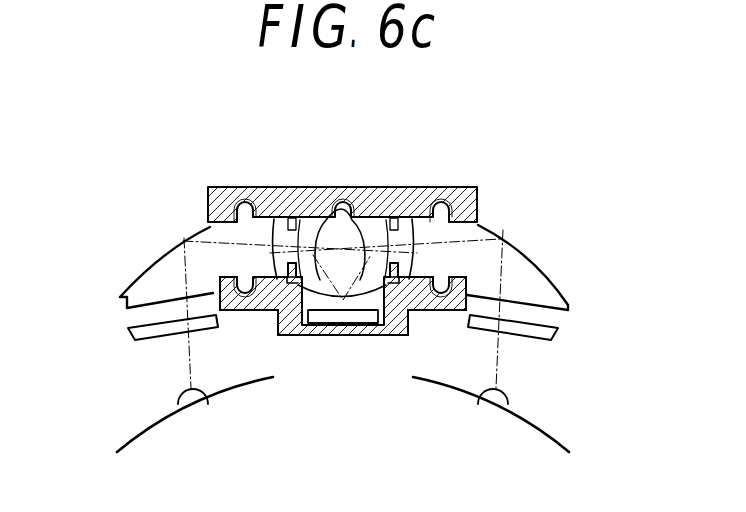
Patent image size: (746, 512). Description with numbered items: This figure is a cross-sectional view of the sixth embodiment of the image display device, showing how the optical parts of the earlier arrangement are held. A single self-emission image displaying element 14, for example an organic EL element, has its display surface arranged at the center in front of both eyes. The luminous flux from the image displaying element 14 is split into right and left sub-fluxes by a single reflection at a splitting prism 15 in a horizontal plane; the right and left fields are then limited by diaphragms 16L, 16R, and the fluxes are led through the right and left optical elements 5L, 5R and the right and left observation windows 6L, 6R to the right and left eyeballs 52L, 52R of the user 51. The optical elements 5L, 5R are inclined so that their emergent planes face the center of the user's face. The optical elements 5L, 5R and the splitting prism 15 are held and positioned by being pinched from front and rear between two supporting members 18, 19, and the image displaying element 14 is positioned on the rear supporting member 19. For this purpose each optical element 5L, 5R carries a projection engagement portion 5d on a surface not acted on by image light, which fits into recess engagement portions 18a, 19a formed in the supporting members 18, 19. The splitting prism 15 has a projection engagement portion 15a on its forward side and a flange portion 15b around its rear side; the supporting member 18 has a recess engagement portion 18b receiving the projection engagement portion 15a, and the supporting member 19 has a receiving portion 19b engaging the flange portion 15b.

The projection engagement portion 5d is at (210, 218).
The left optical element 5L is at (167, 267).
The right optical element 5R is at (523, 272).
The left observation window 6L is at (132, 333).
The right observation window 6R is at (556, 327).
The image displaying element 14 is at (331, 325).
The splitting prism 15 is at (406, 220).
The projection engagement portion of the splitting prism 15a is at (352, 217).
The flange portion 15b is at (309, 218).
The left diaphragm 16L is at (283, 217).
The right diaphragm 16R is at (482, 230).
The supporting member 18 is at (345, 200).
The recess engagement portion 18a is at (242, 200).
The recess engagement portion 18b is at (356, 217).
The rear supporting member 19 is at (273, 330).
The recess engagement portion 19a is at (218, 285).
The receiving portion 19b is at (303, 336).
The user 51 is at (532, 440).
The left eyeball 52L is at (178, 399).
The right eyeball 52R is at (512, 393).